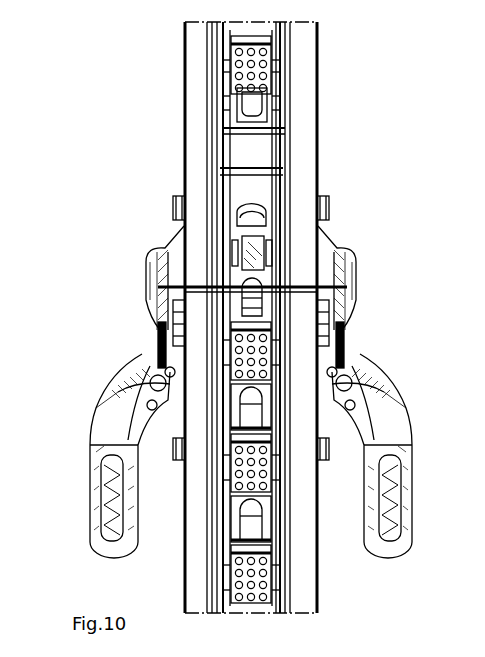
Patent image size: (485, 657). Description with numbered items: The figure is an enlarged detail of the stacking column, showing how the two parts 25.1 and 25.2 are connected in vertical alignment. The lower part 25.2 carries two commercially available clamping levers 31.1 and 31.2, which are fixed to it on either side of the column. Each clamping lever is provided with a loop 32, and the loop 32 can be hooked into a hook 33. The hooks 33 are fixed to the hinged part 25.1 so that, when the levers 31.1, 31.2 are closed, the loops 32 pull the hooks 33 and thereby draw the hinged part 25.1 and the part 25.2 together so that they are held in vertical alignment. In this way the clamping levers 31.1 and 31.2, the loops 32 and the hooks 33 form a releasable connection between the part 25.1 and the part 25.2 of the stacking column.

The hinged part 25.1 is at (398, 63).
The part 25.2 is at (303, 578).
The clamping lever 31.1 is at (118, 375).
The clamping lever 31.2 is at (460, 351).
The loop 32 is at (348, 272).
The hook 33 is at (328, 253).